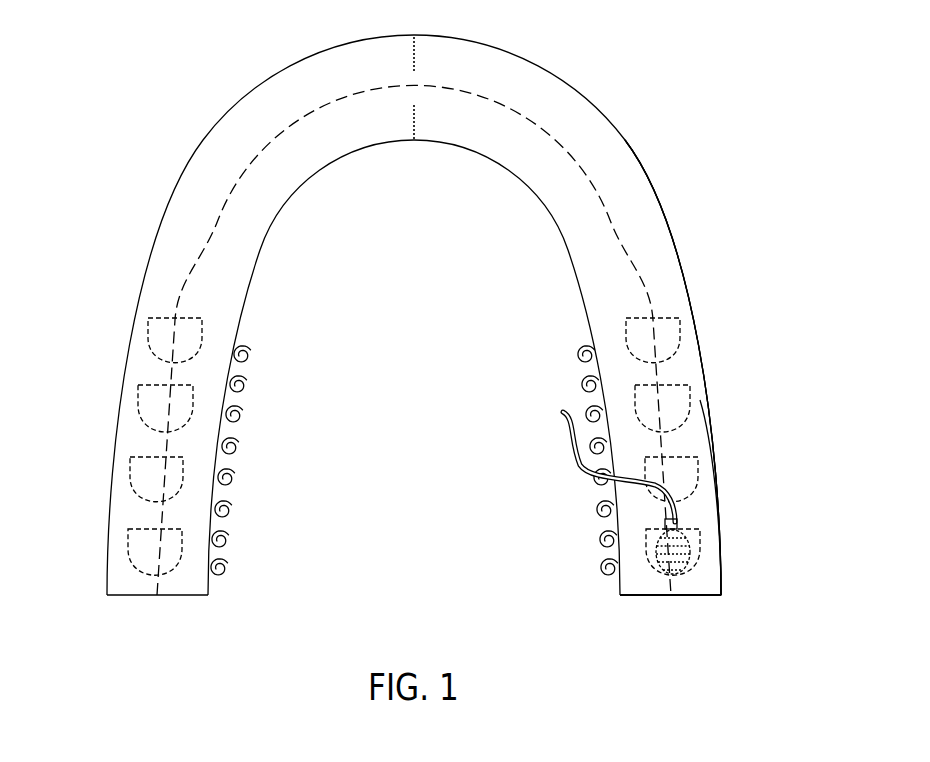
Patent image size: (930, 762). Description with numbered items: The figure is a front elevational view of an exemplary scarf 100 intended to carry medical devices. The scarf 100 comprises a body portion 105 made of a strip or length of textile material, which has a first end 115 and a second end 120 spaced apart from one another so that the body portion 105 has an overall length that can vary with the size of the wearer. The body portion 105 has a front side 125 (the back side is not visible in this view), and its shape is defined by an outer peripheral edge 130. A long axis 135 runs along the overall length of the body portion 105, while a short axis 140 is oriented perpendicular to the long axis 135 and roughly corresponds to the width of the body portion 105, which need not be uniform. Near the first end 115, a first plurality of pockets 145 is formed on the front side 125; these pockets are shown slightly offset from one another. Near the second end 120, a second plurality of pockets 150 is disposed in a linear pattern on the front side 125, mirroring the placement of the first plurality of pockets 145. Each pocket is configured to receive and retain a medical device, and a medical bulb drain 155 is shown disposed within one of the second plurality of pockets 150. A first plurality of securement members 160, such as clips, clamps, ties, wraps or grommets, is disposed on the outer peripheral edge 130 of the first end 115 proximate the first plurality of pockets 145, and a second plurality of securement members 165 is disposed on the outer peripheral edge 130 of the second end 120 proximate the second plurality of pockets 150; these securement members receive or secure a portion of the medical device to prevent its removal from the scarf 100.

The scarf 100 is at (421, 297).
The body portion 105 is at (421, 315).
The first end 115 is at (757, 373).
The second end 120 is at (257, 487).
The front side 125 is at (660, 250).
The outer peripheral edge 130 is at (707, 361).
The long axis 135 is at (588, 177).
The short axis 140 is at (415, 60).
The first plurality of pockets 145 is at (125, 545).
The second plurality of pockets 150 is at (730, 463).
The medical bulb drain 155 is at (708, 553).
The first plurality of securement members 160 is at (257, 380).
The second plurality of securement members 165 is at (561, 399).